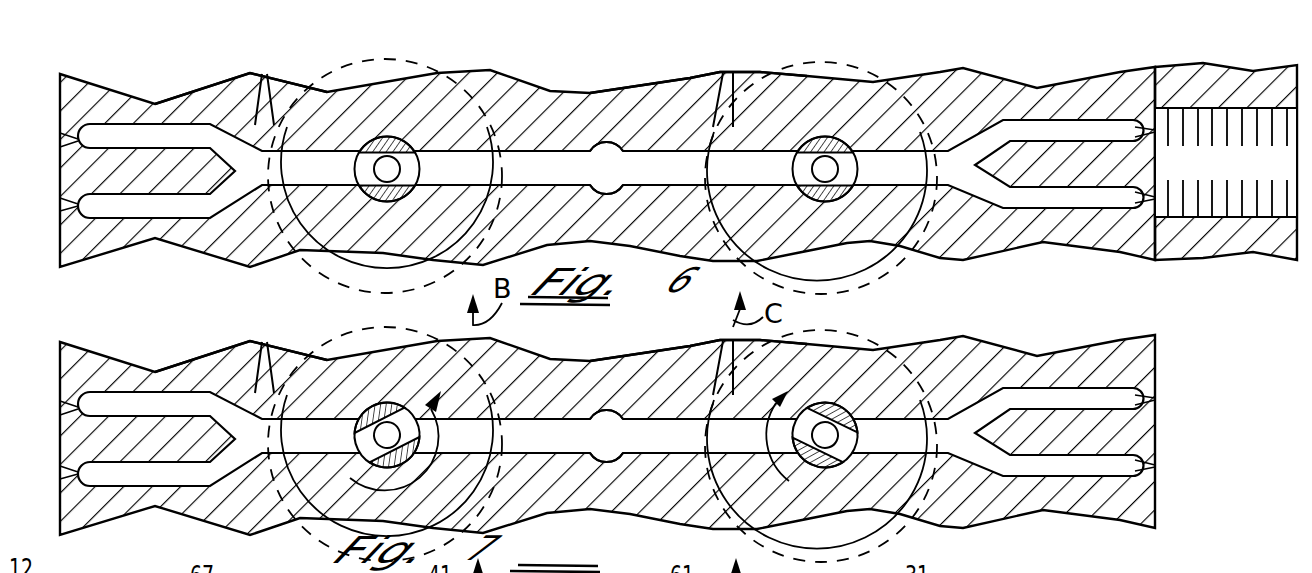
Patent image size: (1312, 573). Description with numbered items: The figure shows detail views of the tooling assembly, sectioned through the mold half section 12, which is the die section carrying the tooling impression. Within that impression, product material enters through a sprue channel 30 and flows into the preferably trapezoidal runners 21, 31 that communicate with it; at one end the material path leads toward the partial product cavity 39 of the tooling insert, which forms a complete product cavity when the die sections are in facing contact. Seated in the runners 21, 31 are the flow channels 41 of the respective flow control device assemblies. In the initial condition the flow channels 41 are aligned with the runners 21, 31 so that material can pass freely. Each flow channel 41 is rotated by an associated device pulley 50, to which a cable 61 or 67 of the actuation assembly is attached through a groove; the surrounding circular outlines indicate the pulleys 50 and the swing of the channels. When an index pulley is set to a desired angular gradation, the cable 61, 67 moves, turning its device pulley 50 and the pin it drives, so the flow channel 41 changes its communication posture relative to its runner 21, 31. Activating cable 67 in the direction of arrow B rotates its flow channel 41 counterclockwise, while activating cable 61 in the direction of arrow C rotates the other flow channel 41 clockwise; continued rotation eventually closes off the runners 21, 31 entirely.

In FIG. 6, the mold half section 12 is at (119, 100).
In FIG. 7, the mold half section 12 is at (85, 357).
In FIG. 6, the runner 21 is at (437, 163).
In FIG. 6, the sprue channel 30 is at (602, 143).
In FIG. 7, the sprue channel 30 is at (607, 427).
In FIG. 6, the runner 31 is at (893, 153).
In FIG. 6, the partial product cavity 39 is at (1230, 120).
In FIG. 6, the flow channel 41 is at (362, 167).
In FIG. 7, the flow channel 41 is at (405, 427).
In FIG. 6, the device pulley 50 is at (413, 44).
In FIG. 7, the device pulley 50 is at (320, 318).
In FIG. 6, the cable 61 is at (733, 73).
In FIG. 7, the cable 61 is at (733, 347).
In FIG. 6, the cable 67 is at (259, 73).
In FIG. 7, the cable 67 is at (258, 353).